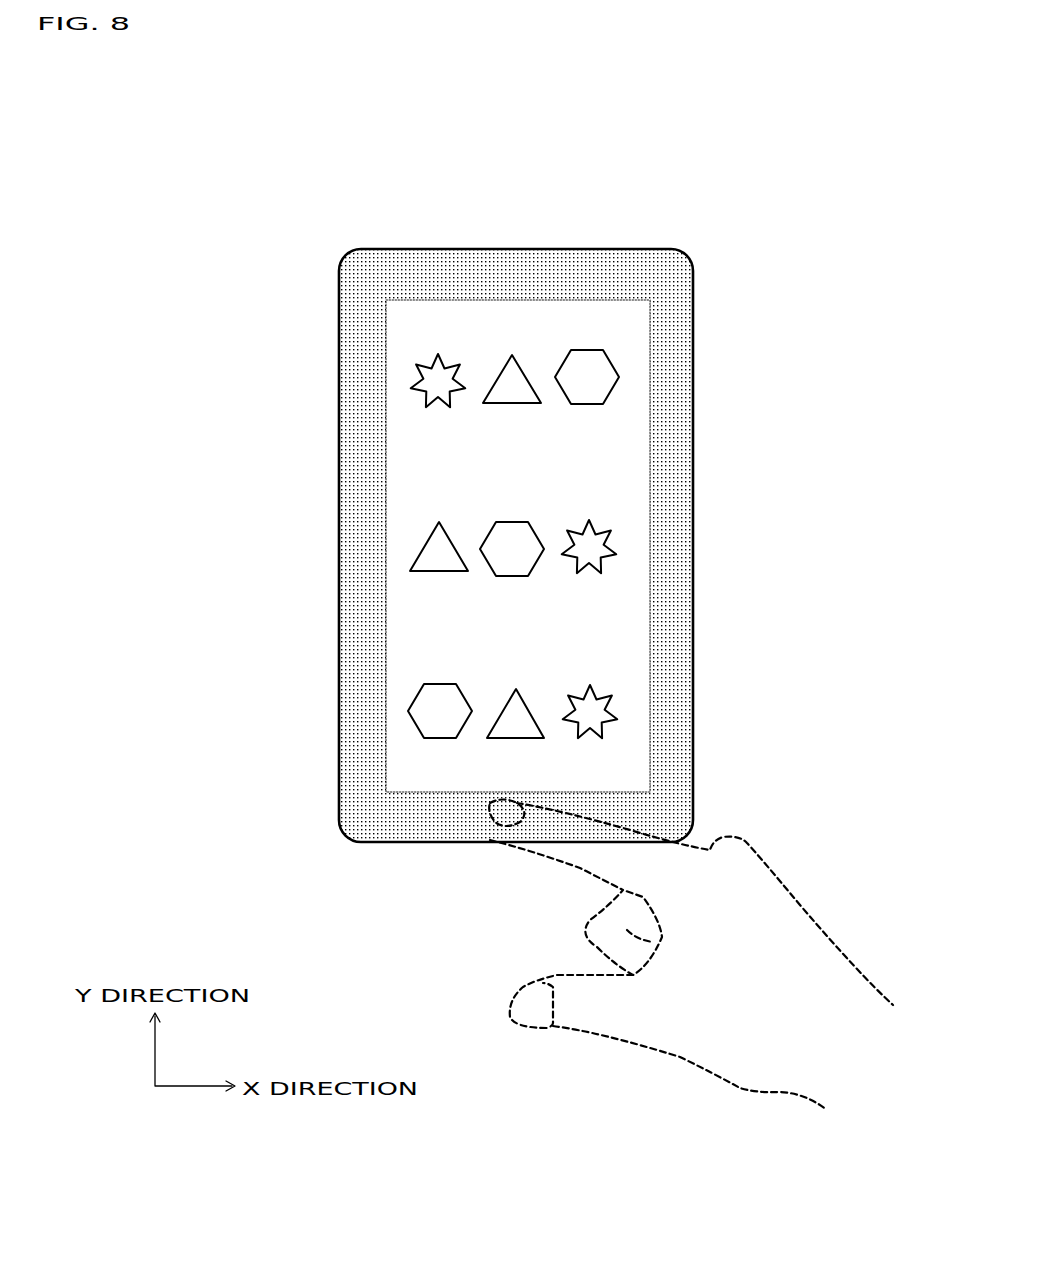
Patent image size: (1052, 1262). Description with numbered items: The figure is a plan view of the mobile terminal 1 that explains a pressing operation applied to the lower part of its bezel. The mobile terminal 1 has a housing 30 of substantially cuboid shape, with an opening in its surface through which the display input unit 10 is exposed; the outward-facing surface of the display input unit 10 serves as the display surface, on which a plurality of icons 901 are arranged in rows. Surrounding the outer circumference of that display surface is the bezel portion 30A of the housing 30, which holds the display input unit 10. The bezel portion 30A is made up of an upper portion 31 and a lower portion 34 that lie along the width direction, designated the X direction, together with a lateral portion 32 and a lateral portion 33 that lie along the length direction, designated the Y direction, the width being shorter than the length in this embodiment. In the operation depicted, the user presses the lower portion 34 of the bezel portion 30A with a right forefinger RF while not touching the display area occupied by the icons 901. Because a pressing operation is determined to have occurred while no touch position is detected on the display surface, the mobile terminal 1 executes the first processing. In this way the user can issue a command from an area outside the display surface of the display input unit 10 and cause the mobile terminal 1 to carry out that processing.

The mobile terminal 1 is at (242, 243).
The display input unit 10 is at (374, 380).
The housing 30 is at (688, 256).
The bezel portion 30A is at (652, 173).
The upper portion 31 is at (574, 268).
The lateral portion 32 is at (348, 615).
The lateral portion 33 is at (690, 549).
The lower portion 34 is at (390, 821).
The icons 901 is at (514, 387).
The right forefinger RF is at (491, 828).